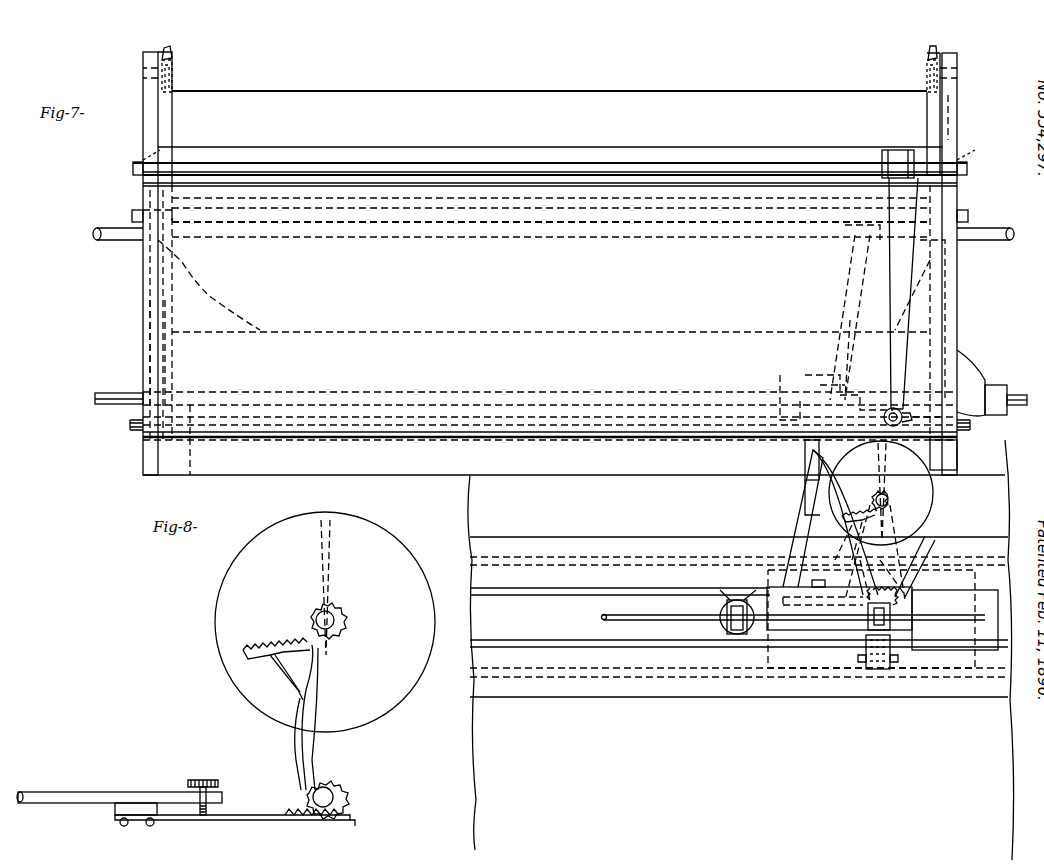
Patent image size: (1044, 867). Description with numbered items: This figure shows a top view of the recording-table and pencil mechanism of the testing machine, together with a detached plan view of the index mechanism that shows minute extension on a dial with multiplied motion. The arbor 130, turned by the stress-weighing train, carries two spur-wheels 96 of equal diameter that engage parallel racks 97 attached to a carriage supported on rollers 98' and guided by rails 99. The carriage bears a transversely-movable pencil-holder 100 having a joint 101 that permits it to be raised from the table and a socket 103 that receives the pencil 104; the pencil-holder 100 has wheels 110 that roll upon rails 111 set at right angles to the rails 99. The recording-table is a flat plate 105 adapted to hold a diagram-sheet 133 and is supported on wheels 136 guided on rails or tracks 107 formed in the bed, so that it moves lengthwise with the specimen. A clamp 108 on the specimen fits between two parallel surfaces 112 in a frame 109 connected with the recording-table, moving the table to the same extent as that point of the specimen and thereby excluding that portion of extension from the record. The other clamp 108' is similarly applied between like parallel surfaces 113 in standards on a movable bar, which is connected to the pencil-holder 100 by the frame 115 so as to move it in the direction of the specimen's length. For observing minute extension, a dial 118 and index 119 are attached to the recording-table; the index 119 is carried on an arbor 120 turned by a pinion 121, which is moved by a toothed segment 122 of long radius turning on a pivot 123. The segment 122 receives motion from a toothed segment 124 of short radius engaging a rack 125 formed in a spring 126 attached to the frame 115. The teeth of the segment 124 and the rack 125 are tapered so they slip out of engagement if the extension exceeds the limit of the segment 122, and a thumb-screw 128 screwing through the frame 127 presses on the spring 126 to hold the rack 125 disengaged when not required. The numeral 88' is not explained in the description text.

In FIG. 7, the spring 88' is at (957, 320).
In FIG. 7, the spur-wheels 96 is at (150, 265).
In FIG. 7, the racks 97 is at (148, 296).
In FIG. 7, the rollers 98' is at (549, 49).
In FIG. 7, the rails 99 is at (172, 88).
In FIG. 7, the pencil-holder 100 is at (900, 275).
In FIG. 7, the joint 101 is at (890, 152).
In FIG. 7, the socket 103 is at (855, 400).
In FIG. 7, the pencil 104 is at (960, 422).
In FIG. 7, the flat plate 105 is at (712, 185).
In FIG. 7, the rails or tracks 107 is at (132, 214).
In FIG. 7, the clamp 108 is at (739, 636).
In FIG. 7, the clamp 108' is at (737, 663).
In FIG. 7, the frame 109 is at (905, 630).
In FIG. 7, the wheels 110 is at (133, 168).
In FIG. 7, the rails 111 is at (975, 380).
In FIG. 7, the parallel surfaces 112 is at (866, 645).
In FIG. 7, the parallel surfaces 113 is at (727, 633).
In FIG. 7, the frame 115 is at (965, 368).
In FIG. 8, the frame 115 is at (118, 810).
In FIG. 7, the dial 118 is at (882, 493).
In FIG. 8, the dial 118 is at (325, 622).
In FIG. 7, the index 119 is at (878, 470).
In FIG. 8, the index 119 is at (330, 578).
In FIG. 7, the arbor 120 is at (872, 496).
In FIG. 8, the arbor 120 is at (333, 642).
In FIG. 7, the pinion 121 is at (890, 508).
In FIG. 8, the pinion 121 is at (340, 618).
In FIG. 7, the toothed segment 122 is at (856, 524).
In FIG. 8, the toothed segment 122 is at (292, 636).
In FIG. 7, the pivot 123 is at (905, 582).
In FIG. 8, the pivot 123 is at (340, 796).
In FIG. 7, the toothed segment 124 is at (893, 602).
In FIG. 8, the toothed segment 124 is at (338, 792).
In FIG. 8, the rack 125 is at (355, 826).
In FIG. 8, the spring 126 is at (232, 806).
In FIG. 8, the frame 127 is at (162, 800).
In FIG. 7, the thumb-screw 128 is at (830, 586).
In FIG. 8, the thumb-screw 128 is at (218, 792).
In FIG. 7, the arbor 130 is at (118, 236).
In FIG. 7, the diagram-sheet 133 is at (550, 336).
In FIG. 7, the wheels 136 is at (135, 196).